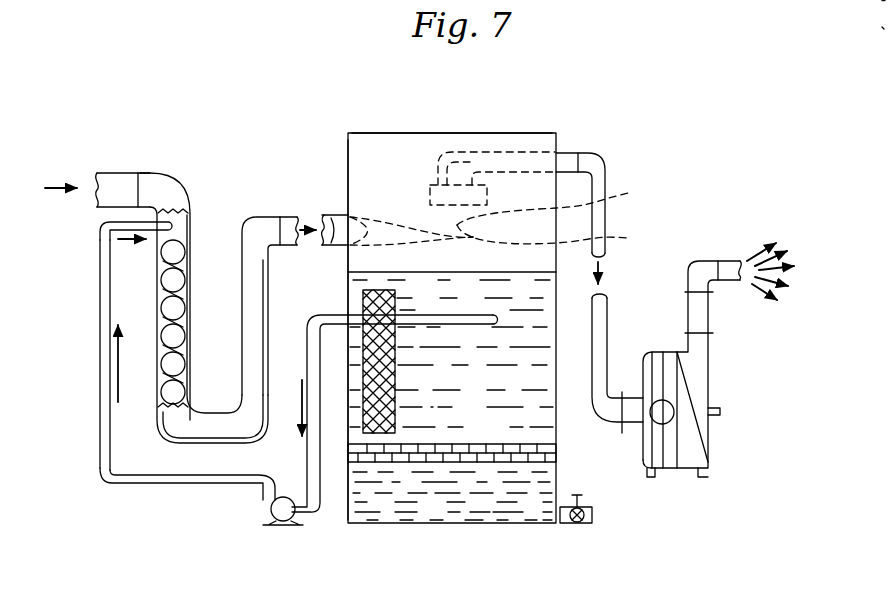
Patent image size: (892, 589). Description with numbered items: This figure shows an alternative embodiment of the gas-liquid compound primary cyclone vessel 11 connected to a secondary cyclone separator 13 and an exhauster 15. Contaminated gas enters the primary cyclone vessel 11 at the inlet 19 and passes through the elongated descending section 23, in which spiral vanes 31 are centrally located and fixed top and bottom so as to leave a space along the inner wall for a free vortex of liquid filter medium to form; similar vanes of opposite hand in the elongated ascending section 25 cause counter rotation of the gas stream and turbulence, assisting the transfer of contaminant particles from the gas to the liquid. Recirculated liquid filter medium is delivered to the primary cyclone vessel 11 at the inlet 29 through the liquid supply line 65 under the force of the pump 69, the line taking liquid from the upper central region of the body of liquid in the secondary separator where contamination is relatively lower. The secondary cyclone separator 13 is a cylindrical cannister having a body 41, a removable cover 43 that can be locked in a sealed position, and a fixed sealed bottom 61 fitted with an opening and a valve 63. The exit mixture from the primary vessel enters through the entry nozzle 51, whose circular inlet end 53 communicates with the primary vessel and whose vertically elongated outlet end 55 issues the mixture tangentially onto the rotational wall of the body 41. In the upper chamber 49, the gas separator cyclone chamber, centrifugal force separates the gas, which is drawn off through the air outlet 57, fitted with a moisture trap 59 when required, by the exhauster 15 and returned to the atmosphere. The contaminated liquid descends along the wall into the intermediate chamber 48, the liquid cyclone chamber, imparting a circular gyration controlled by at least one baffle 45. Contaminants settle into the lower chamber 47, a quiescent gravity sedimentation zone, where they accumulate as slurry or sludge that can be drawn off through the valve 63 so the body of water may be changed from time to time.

The primary cyclone vessel 11 is at (210, 185).
The secondary cyclone separator 13 is at (447, 126).
The exhauster 15 is at (658, 310).
The inlet 19 is at (110, 172).
The elongated descending section 23 is at (185, 295).
The elongated ascending section 25 is at (258, 300).
The inlet 29 is at (130, 222).
The spiral vanes 31 is at (158, 338).
The body 41 is at (347, 160).
The removable cover 43 is at (388, 133).
The baffle 45 is at (402, 413).
The lower chamber 47 is at (480, 502).
The intermediate chamber 48 is at (442, 413).
The upper chamber 49 is at (522, 192).
The entry nozzle 51 is at (502, 239).
The inlet end 53 is at (345, 215).
The outlet end 55 is at (507, 212).
The air outlet 57 is at (505, 152).
The moisture trap 59 is at (450, 150).
The bottom 61 is at (558, 530).
The valve 63 is at (582, 496).
The liquid supply line 65 is at (150, 483).
The pump 69 is at (272, 520).